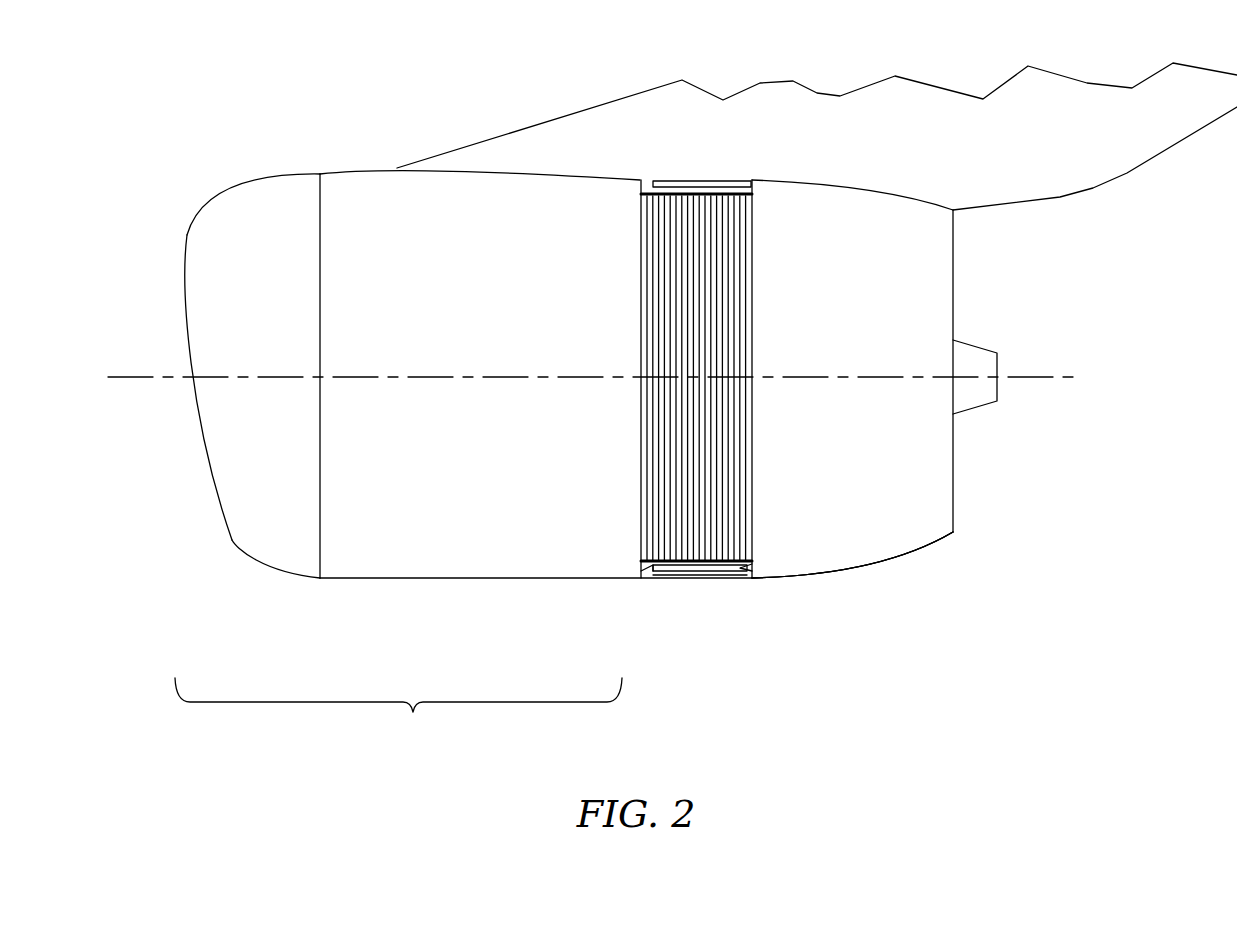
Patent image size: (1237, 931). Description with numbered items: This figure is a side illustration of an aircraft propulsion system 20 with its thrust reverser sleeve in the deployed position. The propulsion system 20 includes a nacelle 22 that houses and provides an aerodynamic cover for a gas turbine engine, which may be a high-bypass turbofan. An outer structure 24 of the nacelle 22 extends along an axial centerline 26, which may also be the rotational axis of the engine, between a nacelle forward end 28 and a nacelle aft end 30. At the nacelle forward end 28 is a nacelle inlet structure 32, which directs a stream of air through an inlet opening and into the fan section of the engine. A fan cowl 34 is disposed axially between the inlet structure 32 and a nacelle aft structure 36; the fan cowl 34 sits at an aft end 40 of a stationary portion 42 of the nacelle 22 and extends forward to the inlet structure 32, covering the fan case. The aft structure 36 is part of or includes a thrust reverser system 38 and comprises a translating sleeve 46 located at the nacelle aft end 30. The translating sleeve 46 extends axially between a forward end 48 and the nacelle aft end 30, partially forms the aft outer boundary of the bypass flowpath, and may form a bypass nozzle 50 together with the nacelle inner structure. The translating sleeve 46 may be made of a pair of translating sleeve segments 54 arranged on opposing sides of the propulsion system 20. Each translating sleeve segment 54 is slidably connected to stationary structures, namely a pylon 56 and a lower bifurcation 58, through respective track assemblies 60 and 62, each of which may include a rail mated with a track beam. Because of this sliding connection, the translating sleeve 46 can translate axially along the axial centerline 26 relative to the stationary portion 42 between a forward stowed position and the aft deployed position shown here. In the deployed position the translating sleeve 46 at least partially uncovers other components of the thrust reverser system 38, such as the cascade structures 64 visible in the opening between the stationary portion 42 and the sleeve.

The aircraft propulsion system 20 is at (146, 131).
The nacelle 22 is at (353, 150).
The outer structure 24 is at (357, 590).
The axial centerline 26 is at (1067, 377).
The nacelle forward end 28 is at (185, 240).
The nacelle aft end 30 is at (955, 233).
The nacelle inlet structure 32 is at (268, 575).
The fan cowl 34 is at (513, 578).
The nacelle aft structure 36 is at (882, 574).
The translating sleeve 46 is at (852, 555).
The thrust reverser system 38 is at (700, 626).
The aft end 40 is at (652, 578).
The stationary portion 42 is at (398, 713).
The forward end 48 is at (738, 578).
The bypass nozzle 50 is at (955, 523).
The translating sleeve segment 54 is at (903, 557).
The pylon 56 is at (513, 128).
The lower bifurcation 58 is at (680, 578).
The track assembly 60 is at (748, 181).
The track assembly 62 is at (718, 578).
The cascade structure 64 is at (670, 475).